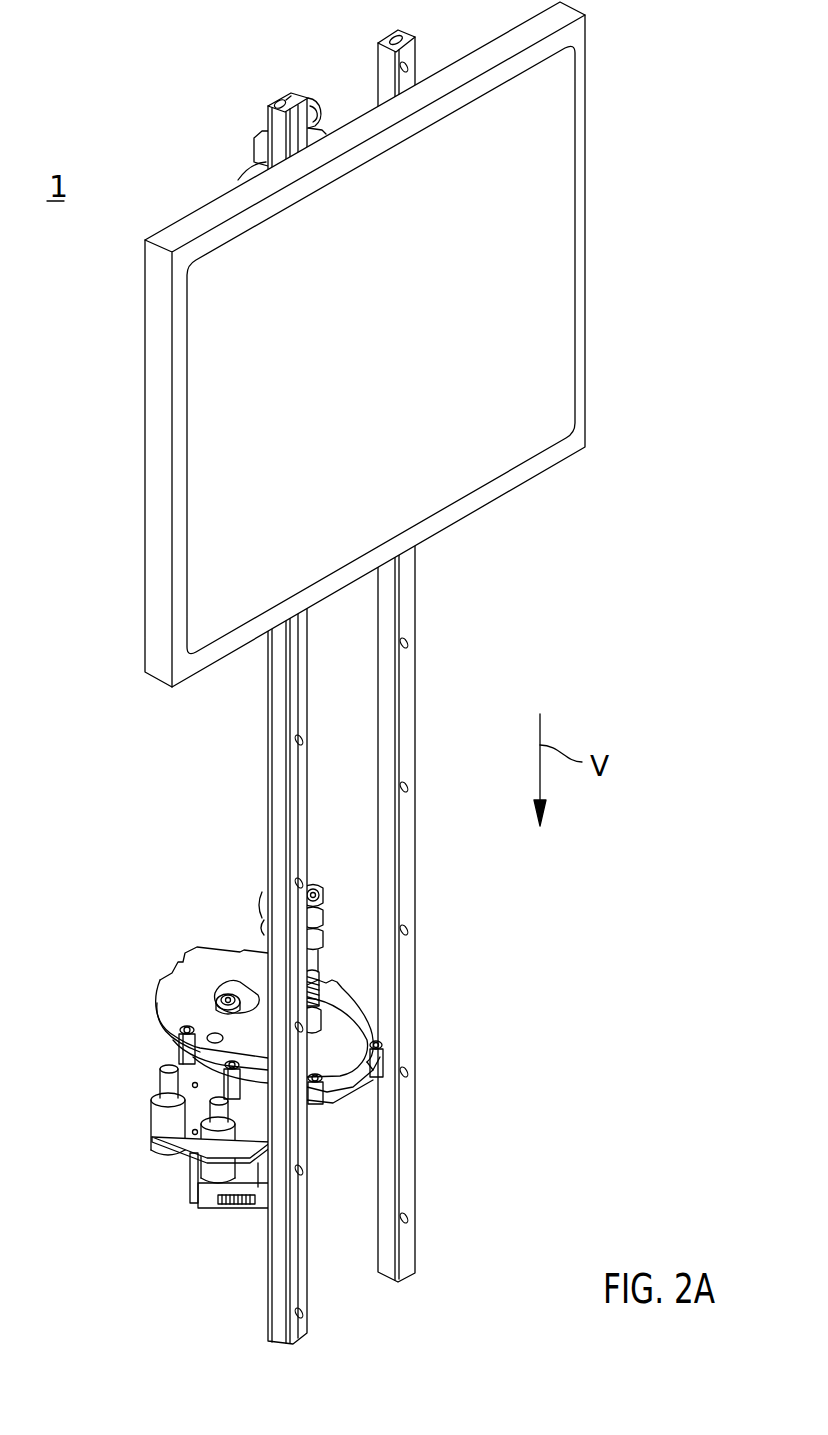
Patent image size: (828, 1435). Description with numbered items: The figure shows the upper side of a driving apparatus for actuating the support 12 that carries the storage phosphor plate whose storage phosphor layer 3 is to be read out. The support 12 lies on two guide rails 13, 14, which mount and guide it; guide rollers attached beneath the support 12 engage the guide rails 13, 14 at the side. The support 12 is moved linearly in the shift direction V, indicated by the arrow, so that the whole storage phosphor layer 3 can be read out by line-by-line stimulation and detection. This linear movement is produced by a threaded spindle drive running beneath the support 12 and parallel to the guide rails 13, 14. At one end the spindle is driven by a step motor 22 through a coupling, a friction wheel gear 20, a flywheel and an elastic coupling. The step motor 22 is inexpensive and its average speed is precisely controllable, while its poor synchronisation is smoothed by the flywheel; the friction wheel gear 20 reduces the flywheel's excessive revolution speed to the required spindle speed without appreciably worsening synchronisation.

The storage phosphor layer 3 is at (427, 460).
The support 12 is at (331, 344).
The guide rail 13 is at (405, 1108).
The guide rail 14 is at (303, 1292).
The friction wheel gear 20 is at (236, 1085).
The step motor 22 is at (212, 1207).